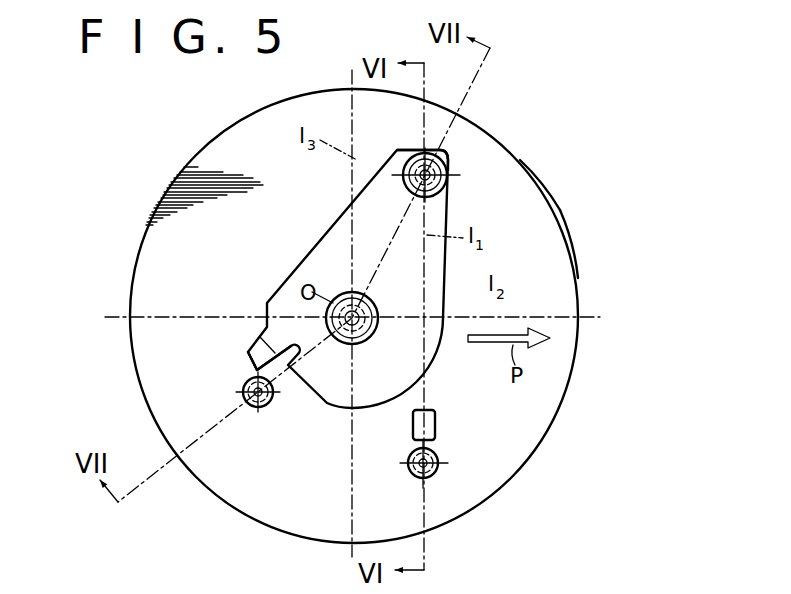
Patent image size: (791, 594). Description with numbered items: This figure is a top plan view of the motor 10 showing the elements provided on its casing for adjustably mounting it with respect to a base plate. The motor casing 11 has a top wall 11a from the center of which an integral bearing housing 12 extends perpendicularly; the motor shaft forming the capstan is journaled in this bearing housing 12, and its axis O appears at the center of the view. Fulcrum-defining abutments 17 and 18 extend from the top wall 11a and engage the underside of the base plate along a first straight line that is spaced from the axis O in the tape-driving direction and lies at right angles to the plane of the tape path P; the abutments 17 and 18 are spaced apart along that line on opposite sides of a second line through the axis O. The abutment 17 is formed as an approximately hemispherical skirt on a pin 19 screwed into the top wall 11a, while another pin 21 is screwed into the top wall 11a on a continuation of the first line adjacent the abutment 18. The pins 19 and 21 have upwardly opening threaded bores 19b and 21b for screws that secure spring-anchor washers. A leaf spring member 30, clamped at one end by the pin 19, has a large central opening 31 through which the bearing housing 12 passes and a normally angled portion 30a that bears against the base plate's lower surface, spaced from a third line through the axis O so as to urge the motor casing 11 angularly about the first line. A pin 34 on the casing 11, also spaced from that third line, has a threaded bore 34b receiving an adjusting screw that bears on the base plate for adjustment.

The motor 10 is at (550, 177).
The motor casing 11 is at (578, 278).
The top wall 11a is at (547, 223).
The bearing housing 12 is at (365, 303).
The abutment 17 is at (442, 163).
The abutment 18 is at (437, 428).
The pin 19 is at (407, 167).
The threaded bore 19b is at (445, 182).
The pin 21 is at (437, 472).
The threaded bore 21b is at (437, 455).
The leaf spring member 30 is at (350, 223).
The angled portion 30a is at (260, 355).
The opening 31 is at (367, 338).
The pin 34 is at (263, 408).
The threaded bore 34b is at (245, 392).